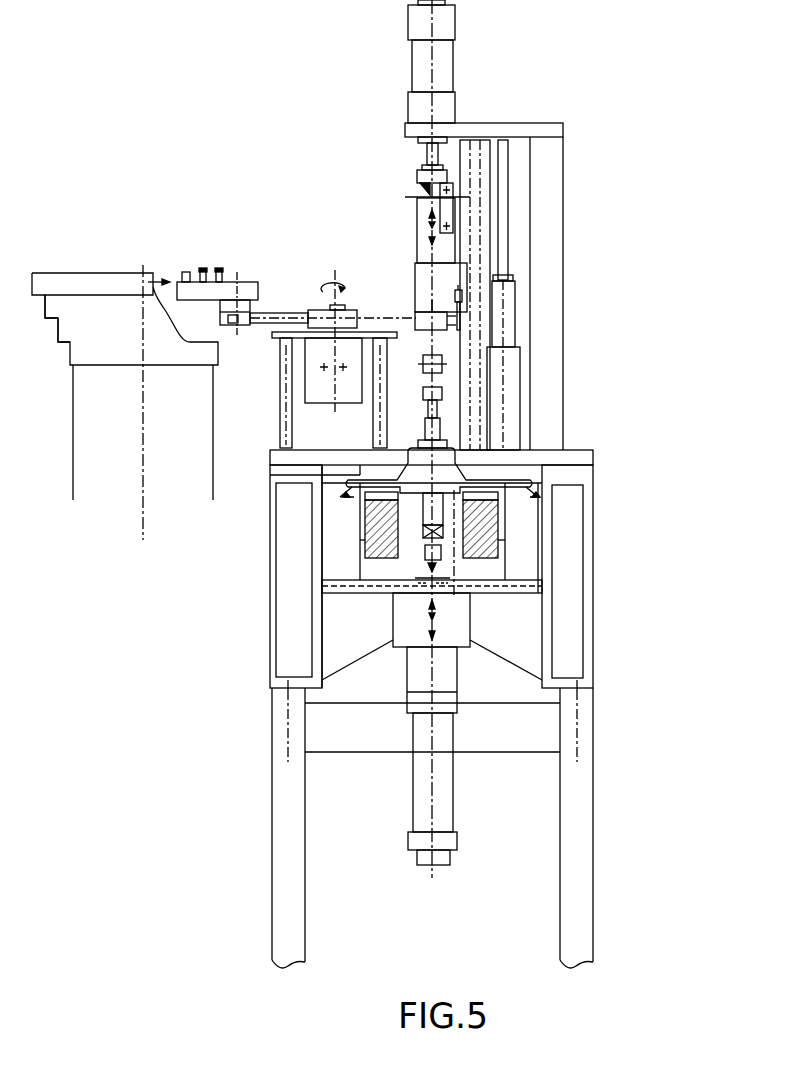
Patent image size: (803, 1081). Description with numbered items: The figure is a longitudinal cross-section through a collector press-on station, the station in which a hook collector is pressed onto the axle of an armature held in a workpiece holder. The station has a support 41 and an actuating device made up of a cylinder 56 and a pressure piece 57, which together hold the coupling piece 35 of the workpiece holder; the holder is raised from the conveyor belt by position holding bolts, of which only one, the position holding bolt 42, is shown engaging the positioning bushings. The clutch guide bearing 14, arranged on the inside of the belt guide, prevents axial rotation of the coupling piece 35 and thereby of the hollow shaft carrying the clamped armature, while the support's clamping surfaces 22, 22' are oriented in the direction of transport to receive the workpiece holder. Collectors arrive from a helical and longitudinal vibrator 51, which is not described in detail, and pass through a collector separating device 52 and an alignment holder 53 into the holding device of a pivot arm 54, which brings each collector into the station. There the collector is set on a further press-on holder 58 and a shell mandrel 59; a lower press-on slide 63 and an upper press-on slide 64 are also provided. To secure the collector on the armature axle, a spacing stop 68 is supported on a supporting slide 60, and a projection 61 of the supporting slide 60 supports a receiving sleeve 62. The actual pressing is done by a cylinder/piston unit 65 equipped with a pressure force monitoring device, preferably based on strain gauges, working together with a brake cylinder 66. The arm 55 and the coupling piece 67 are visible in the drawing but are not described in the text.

The clutch guide bearing 14 is at (500, 563).
The clamping surface 22 is at (475, 709).
The clamping surface 22' is at (277, 576).
The coupling piece 35 is at (392, 588).
The support 41 is at (543, 550).
The position holding bolt 42 is at (520, 507).
The helical and longitudinal vibrator 51 is at (187, 277).
The collector separating device 52 is at (220, 273).
The alignment holder 53 is at (235, 280).
The pivot arm 54 is at (322, 312).
The support arm 55 is at (238, 302).
The cylinder 56 is at (442, 765).
The pressure piece 57 is at (470, 575).
The press-on holder 58 is at (415, 297).
The shell mandrel 59 is at (417, 267).
The supporting slide 60 is at (480, 416).
The projection 61 is at (440, 385).
The receiving sleeve 62 is at (445, 397).
The lower press-on slide 63 is at (470, 256).
The upper press-on slide 64 is at (470, 160).
The cylinder/piston unit 65 is at (443, 80).
The brake cylinder 66 is at (505, 312).
The piston rod 67 is at (420, 183).
The spacing stop 68 is at (467, 325).